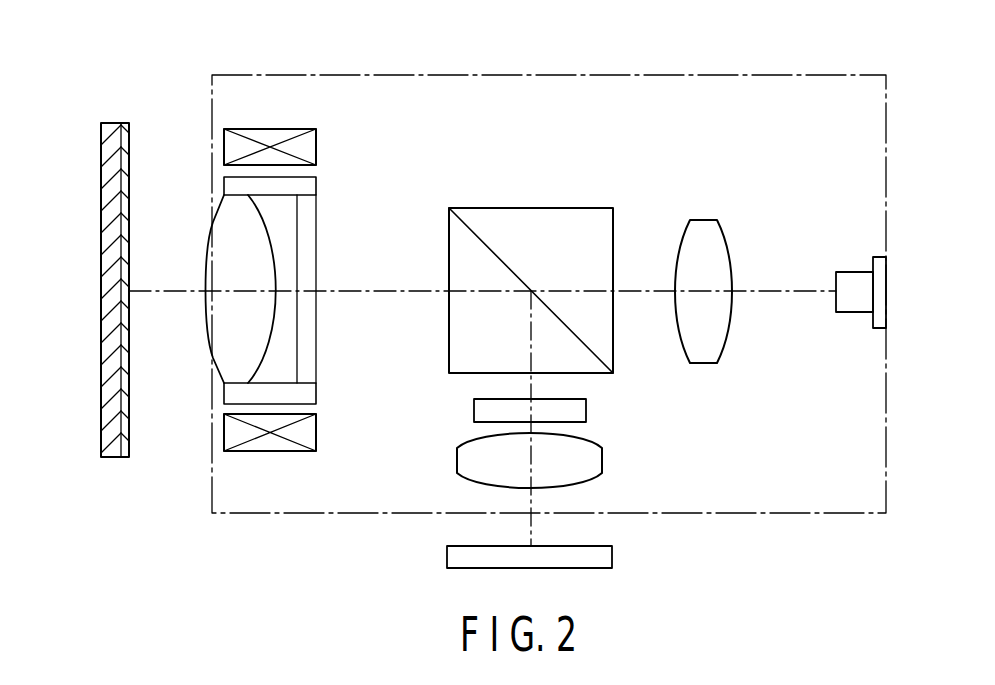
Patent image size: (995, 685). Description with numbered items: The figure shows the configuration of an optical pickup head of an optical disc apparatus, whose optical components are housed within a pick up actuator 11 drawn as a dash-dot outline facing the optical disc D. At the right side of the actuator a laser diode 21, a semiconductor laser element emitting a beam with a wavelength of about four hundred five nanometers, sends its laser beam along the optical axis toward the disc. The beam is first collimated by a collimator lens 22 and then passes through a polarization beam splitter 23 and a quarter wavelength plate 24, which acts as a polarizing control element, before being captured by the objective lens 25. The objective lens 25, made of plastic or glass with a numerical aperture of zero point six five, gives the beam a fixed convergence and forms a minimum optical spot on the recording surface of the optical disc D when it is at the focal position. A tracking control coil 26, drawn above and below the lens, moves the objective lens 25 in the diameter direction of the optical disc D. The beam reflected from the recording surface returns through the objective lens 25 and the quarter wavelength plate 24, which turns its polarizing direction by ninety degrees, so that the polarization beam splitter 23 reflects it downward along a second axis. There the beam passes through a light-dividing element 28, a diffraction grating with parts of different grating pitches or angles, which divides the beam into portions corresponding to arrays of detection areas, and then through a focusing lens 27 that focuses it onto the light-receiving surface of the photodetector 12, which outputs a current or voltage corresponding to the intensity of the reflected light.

The pick up actuator 11 is at (731, 75).
The optical disc D is at (119, 122).
The tracking control coil 26 is at (292, 129).
The ¼ wavelength plate 24 is at (318, 229).
The objective lens 25 is at (216, 217).
The polarization beam splitter 23 is at (565, 207).
The collimator lens 22 is at (705, 220).
The laser diode 21 is at (856, 271).
The light-dividing element 28 is at (587, 405).
The focusing lens 27 is at (602, 459).
The photodetector 12 is at (612, 552).